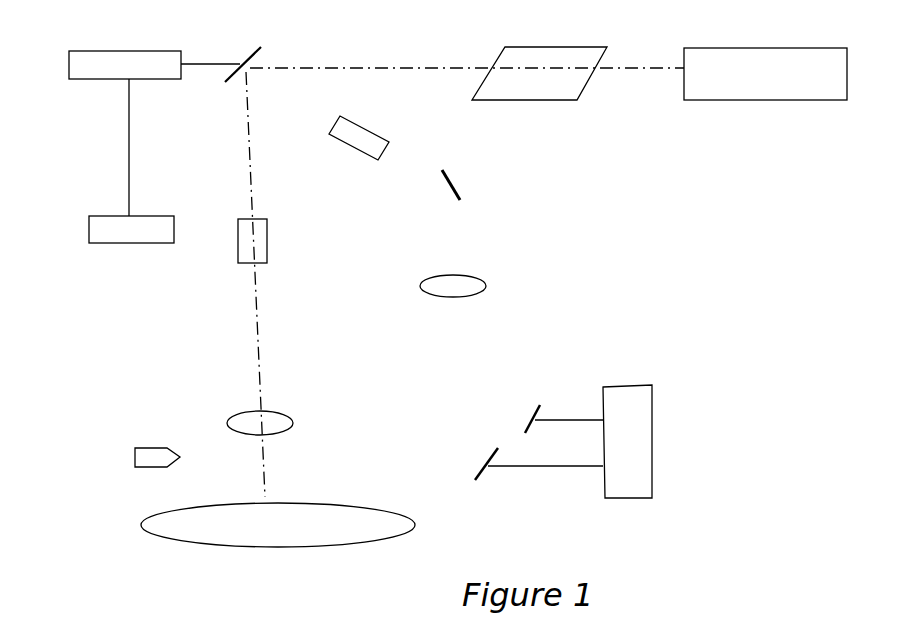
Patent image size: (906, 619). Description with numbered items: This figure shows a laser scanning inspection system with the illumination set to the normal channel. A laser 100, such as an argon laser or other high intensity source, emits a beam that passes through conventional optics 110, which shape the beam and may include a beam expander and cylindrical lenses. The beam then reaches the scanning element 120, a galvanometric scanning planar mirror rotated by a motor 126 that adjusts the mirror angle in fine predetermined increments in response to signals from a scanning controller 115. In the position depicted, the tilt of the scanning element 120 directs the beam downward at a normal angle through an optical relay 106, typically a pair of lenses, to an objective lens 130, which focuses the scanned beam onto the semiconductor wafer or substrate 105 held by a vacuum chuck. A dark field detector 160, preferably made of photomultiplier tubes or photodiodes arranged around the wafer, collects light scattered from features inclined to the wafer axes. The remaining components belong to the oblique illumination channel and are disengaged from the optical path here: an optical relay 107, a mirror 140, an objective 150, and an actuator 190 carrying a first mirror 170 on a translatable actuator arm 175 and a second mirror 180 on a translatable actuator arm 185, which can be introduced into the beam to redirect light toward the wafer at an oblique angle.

The laser 100 is at (785, 100).
The semiconductor wafer or substrate 105 is at (335, 505).
The optical relay 106 is at (240, 245).
The optical relay 107 is at (373, 128).
The conventional optics 110 is at (528, 100).
The scanning controller 115 is at (89, 229).
The scanning element 120 is at (256, 52).
The motor 126 is at (69, 60).
The objective lens 130 is at (243, 412).
The mirror 140 is at (450, 180).
The objective 150 is at (478, 280).
The dark field detector 160 is at (165, 448).
The first mirror 170 is at (530, 401).
The translatable actuator arm 175 is at (584, 412).
The second mirror 180 is at (487, 470).
The translatable actuator arm 185 is at (580, 472).
The actuator 190 is at (642, 429).